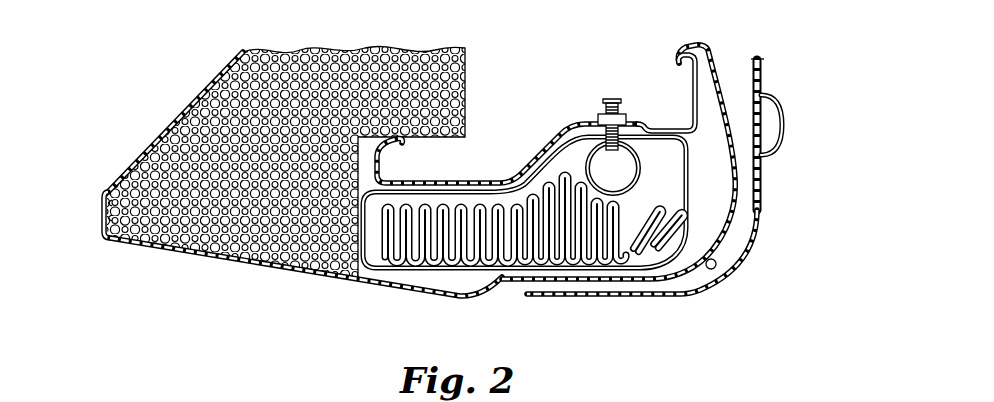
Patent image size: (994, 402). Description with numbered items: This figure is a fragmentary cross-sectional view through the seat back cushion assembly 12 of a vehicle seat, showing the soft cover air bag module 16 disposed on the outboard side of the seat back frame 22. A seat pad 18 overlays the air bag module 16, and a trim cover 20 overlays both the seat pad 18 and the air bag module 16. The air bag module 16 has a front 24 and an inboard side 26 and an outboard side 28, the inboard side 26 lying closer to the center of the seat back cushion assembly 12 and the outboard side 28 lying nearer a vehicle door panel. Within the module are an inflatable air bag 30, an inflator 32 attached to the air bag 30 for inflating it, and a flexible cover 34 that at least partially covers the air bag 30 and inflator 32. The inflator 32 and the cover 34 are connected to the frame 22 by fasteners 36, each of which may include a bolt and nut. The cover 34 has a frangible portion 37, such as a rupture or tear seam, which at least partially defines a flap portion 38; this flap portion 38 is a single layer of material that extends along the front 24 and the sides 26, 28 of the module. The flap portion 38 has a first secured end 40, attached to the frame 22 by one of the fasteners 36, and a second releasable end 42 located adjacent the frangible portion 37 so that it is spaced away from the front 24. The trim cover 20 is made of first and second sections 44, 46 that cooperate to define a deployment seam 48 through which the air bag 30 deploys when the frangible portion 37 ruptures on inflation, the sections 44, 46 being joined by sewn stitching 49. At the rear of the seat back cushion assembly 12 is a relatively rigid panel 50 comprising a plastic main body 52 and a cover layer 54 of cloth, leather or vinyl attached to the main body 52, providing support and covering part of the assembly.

The seat back cushion assembly 12 is at (152, 58).
The soft cover air bag module 16 is at (693, 153).
The seat pad 18 is at (264, 174).
The trim cover 20 is at (133, 255).
The seat back frame 22 is at (695, 120).
The front 24 is at (355, 228).
The inboard side 26 is at (447, 182).
The outboard side 28 is at (447, 285).
The inflatable air bag 30 is at (652, 235).
The inflator 32 is at (602, 178).
The cover 34 is at (367, 280).
The fastener 36 is at (618, 112).
The frangible portion 37 is at (502, 275).
The flap portion 38 is at (390, 270).
The first secured end 40 is at (590, 130).
The second releasable end 42 is at (483, 277).
The first section 44 is at (157, 133).
The second section 46 is at (243, 270).
The deployment seam 48 is at (92, 215).
The sewn stitching 49 is at (100, 208).
The rigid panel 50 is at (747, 248).
The main body 52 is at (720, 264).
The cover layer 54 is at (765, 173).